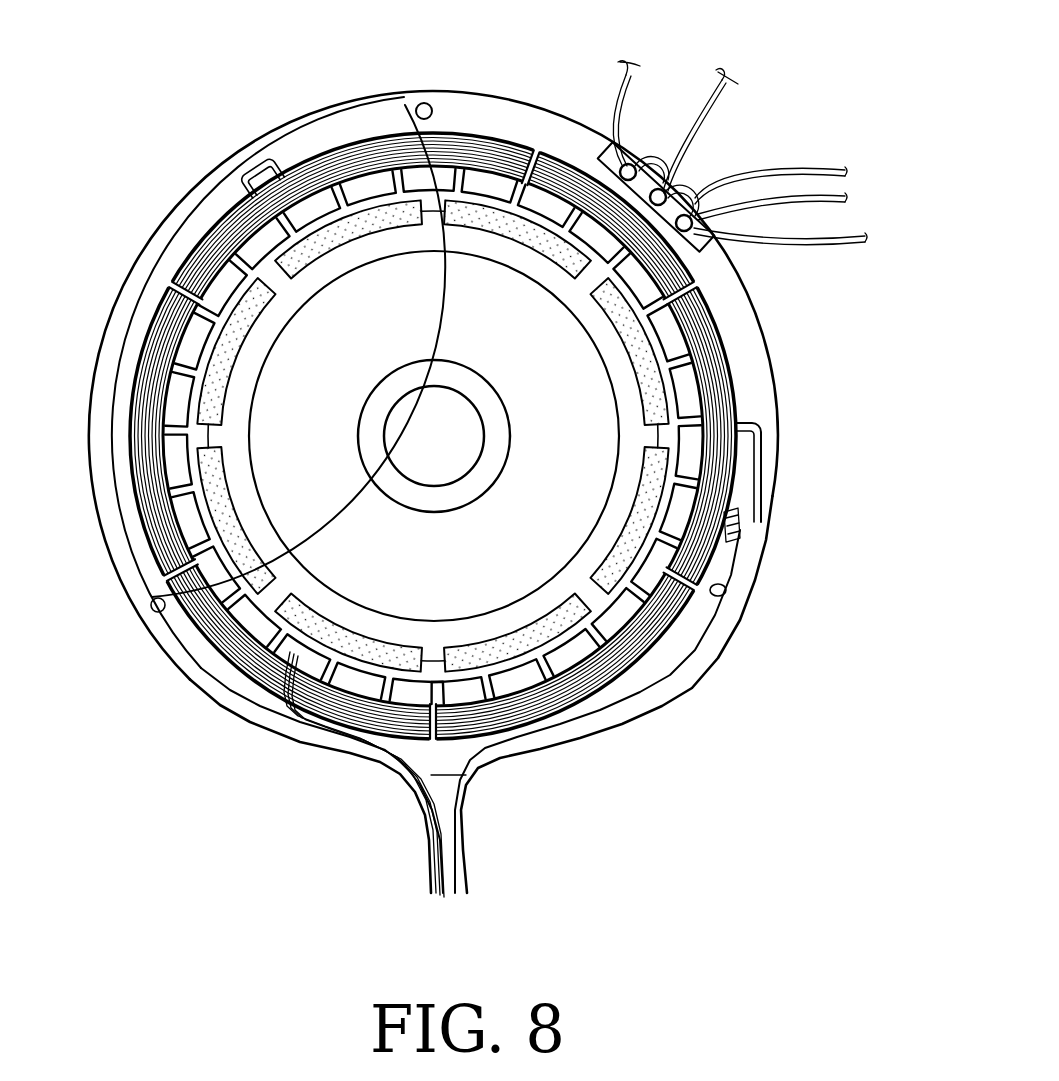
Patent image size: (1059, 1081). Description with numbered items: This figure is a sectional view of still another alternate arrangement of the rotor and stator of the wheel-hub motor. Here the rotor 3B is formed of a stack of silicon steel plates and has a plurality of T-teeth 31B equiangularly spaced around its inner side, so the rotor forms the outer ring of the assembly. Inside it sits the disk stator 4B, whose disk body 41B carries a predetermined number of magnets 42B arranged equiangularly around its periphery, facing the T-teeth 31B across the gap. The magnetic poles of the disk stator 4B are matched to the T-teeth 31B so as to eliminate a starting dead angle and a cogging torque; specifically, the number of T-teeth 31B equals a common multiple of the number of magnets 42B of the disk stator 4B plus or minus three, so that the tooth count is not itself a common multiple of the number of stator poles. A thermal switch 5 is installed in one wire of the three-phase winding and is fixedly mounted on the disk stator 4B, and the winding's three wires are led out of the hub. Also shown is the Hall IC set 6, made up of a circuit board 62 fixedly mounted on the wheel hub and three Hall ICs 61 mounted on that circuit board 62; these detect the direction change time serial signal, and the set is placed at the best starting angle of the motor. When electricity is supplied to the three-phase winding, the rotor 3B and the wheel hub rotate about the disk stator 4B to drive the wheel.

The rotor 3B is at (697, 645).
The disk stator 4B is at (237, 213).
The disk body 41B is at (371, 282).
The magnets 42B is at (473, 220).
The T-teeth 31B is at (573, 653).
The thermal switch 5 is at (742, 525).
The Hall IC set 6 is at (639, 150).
The Hall ICs 61 is at (624, 170).
The circuit board 62 is at (703, 242).